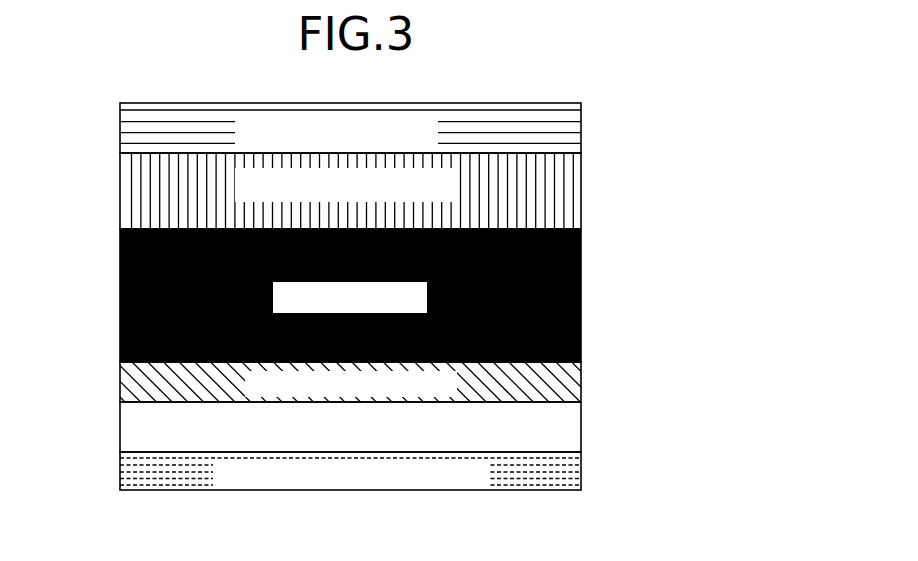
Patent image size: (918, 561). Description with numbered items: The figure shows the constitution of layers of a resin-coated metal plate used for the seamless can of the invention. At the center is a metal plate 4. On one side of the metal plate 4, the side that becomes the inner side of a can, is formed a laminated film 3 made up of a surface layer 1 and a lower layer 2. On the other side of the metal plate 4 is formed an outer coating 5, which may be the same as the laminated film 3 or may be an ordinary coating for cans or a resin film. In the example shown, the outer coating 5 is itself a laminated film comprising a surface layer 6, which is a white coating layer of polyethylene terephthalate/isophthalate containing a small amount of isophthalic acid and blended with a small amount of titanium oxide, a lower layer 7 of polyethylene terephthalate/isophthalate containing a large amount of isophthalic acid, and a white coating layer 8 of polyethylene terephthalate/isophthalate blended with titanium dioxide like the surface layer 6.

The surface layer 1 is at (517, 113).
The lower layer 2 is at (570, 190).
The laminated film 3 is at (112, 104).
The metal plate 4 is at (582, 288).
The outer coating 5 is at (112, 365).
The surface layer 6 is at (502, 483).
The lower layer 7 is at (572, 385).
The white coating layer 8 is at (570, 433).